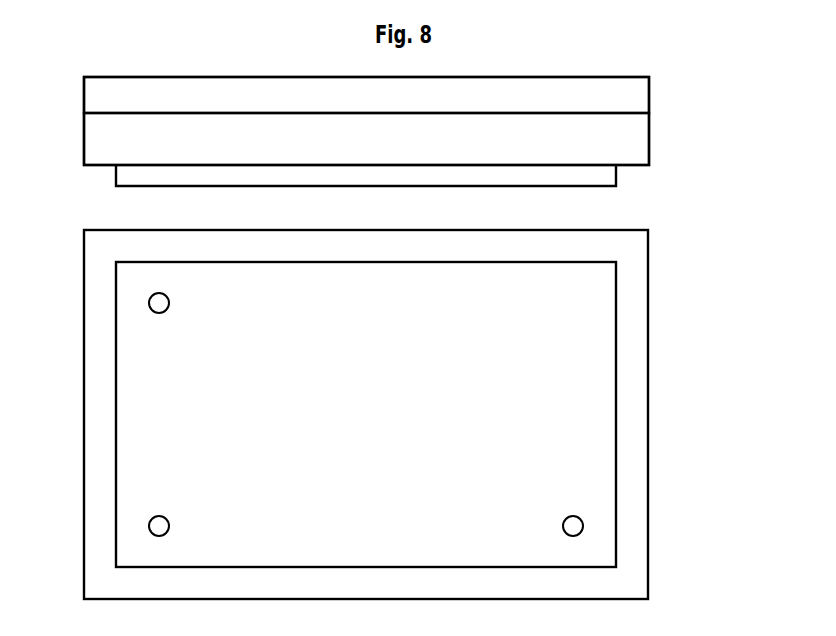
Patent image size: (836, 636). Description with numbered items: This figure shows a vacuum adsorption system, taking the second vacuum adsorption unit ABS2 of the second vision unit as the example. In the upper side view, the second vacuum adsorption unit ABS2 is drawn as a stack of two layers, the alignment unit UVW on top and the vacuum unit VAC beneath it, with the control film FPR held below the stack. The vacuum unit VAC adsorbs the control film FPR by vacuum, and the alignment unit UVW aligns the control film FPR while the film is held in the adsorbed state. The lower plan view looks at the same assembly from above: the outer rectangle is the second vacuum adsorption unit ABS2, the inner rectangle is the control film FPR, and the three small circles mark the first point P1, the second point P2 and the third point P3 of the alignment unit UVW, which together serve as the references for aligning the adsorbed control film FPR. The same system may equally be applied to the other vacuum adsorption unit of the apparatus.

The second vacuum adsorption unit ABS2 is at (743, 84).
The alignment unit UVW is at (638, 93).
The vacuum unit VAC is at (638, 140).
The control film FPR is at (600, 177).
The first point P1 is at (155, 303).
The second point P2 is at (155, 526).
The third point P3 is at (578, 526).